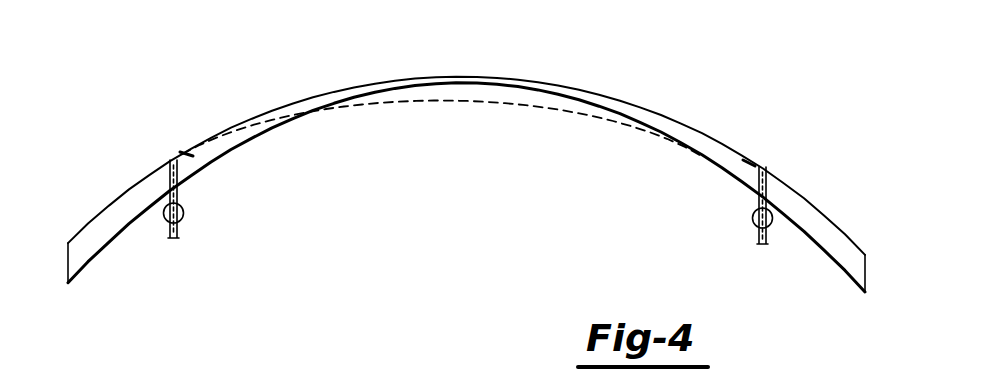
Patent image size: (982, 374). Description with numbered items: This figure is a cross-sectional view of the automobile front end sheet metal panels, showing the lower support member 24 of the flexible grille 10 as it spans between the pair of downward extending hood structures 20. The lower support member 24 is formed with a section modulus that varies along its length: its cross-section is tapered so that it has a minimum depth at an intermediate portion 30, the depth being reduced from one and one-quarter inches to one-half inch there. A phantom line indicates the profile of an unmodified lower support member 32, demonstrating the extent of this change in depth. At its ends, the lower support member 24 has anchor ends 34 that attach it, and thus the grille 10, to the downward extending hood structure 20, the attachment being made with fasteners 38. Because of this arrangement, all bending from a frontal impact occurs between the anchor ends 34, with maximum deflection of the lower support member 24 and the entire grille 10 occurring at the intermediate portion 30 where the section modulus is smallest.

The flexible grille 10 is at (407, 72).
The downward extending hood structure 20 is at (115, 200).
The lower support member 24 is at (672, 118).
The intermediate portion 30 is at (334, 91).
The unmodified lower support member 32 is at (427, 99).
The anchor end 34 is at (182, 230).
The fastener 38 is at (165, 213).